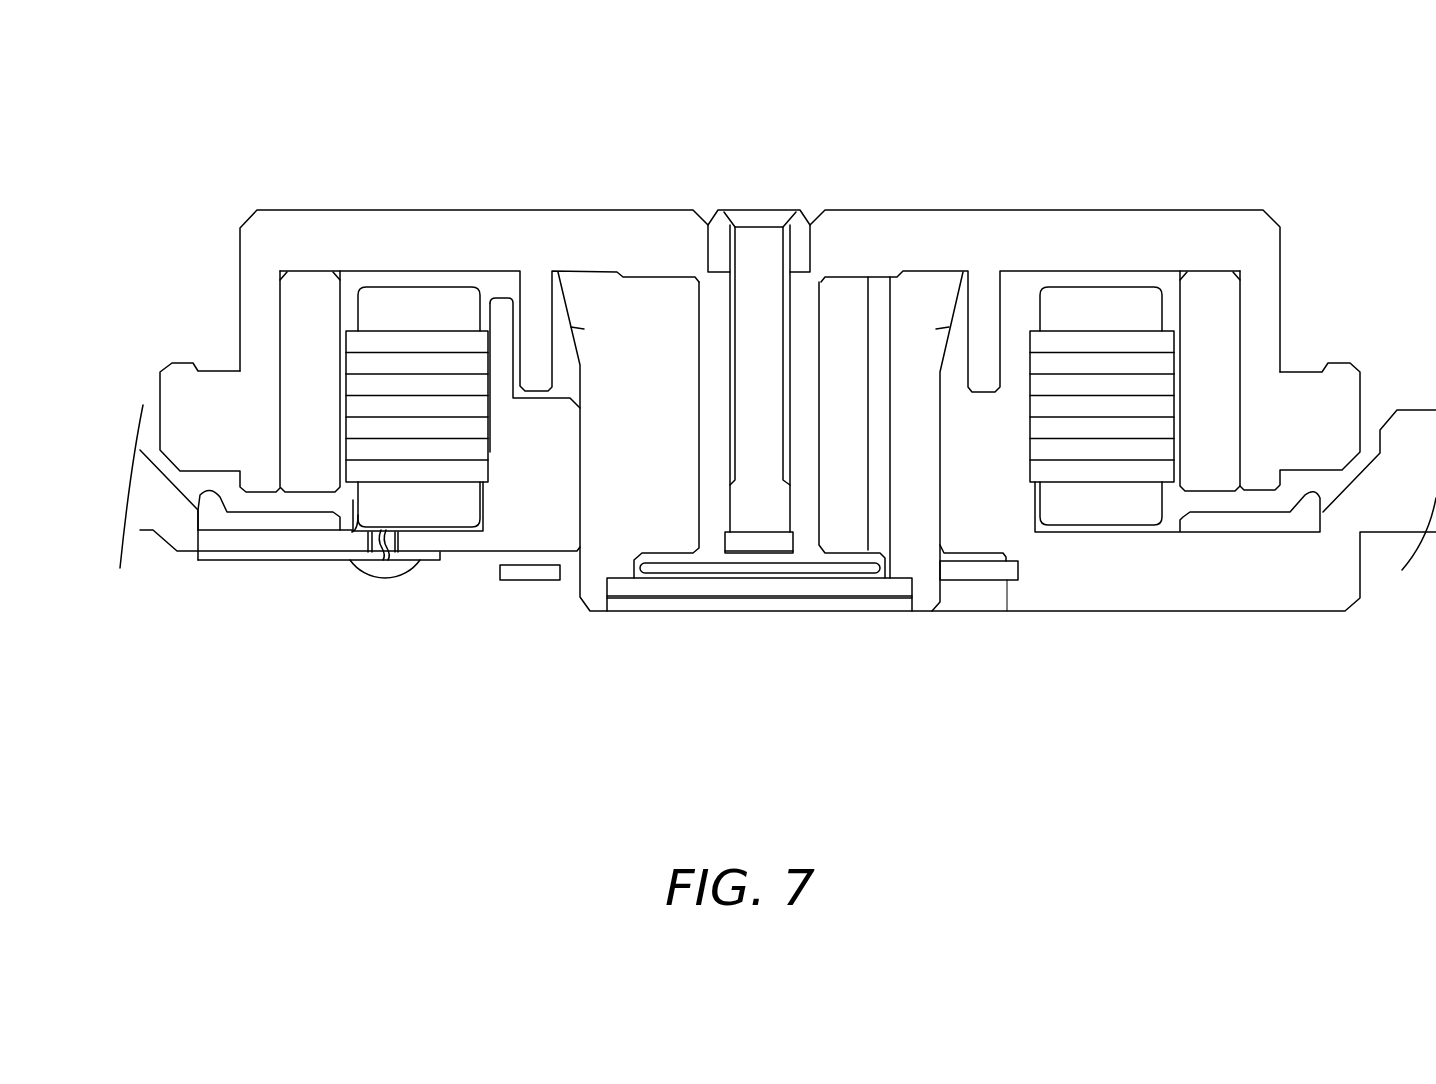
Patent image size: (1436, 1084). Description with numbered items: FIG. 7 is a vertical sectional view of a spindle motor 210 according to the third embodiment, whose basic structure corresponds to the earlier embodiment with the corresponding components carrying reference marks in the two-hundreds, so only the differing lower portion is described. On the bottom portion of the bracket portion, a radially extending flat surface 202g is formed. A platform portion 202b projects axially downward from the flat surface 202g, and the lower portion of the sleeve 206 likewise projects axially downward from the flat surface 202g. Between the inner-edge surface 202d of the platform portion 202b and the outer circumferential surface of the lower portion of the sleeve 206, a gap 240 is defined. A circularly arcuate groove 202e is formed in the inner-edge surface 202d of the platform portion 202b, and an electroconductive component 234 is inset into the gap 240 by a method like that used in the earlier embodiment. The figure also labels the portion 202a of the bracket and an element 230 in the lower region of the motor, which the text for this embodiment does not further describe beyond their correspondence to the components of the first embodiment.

The motor assembly 210 is at (1088, 186).
The sleeve 206 is at (640, 452).
The base plate 202a is at (580, 485).
The platform portion 202b is at (1193, 597).
The inner-edge surface 202d is at (1003, 593).
The circularly arcuate groove 202e is at (1012, 573).
The flat surface 202g is at (540, 512).
The circuit board 230 is at (320, 555).
The electroconductive component 234 is at (530, 580).
The gap 240 is at (945, 603).